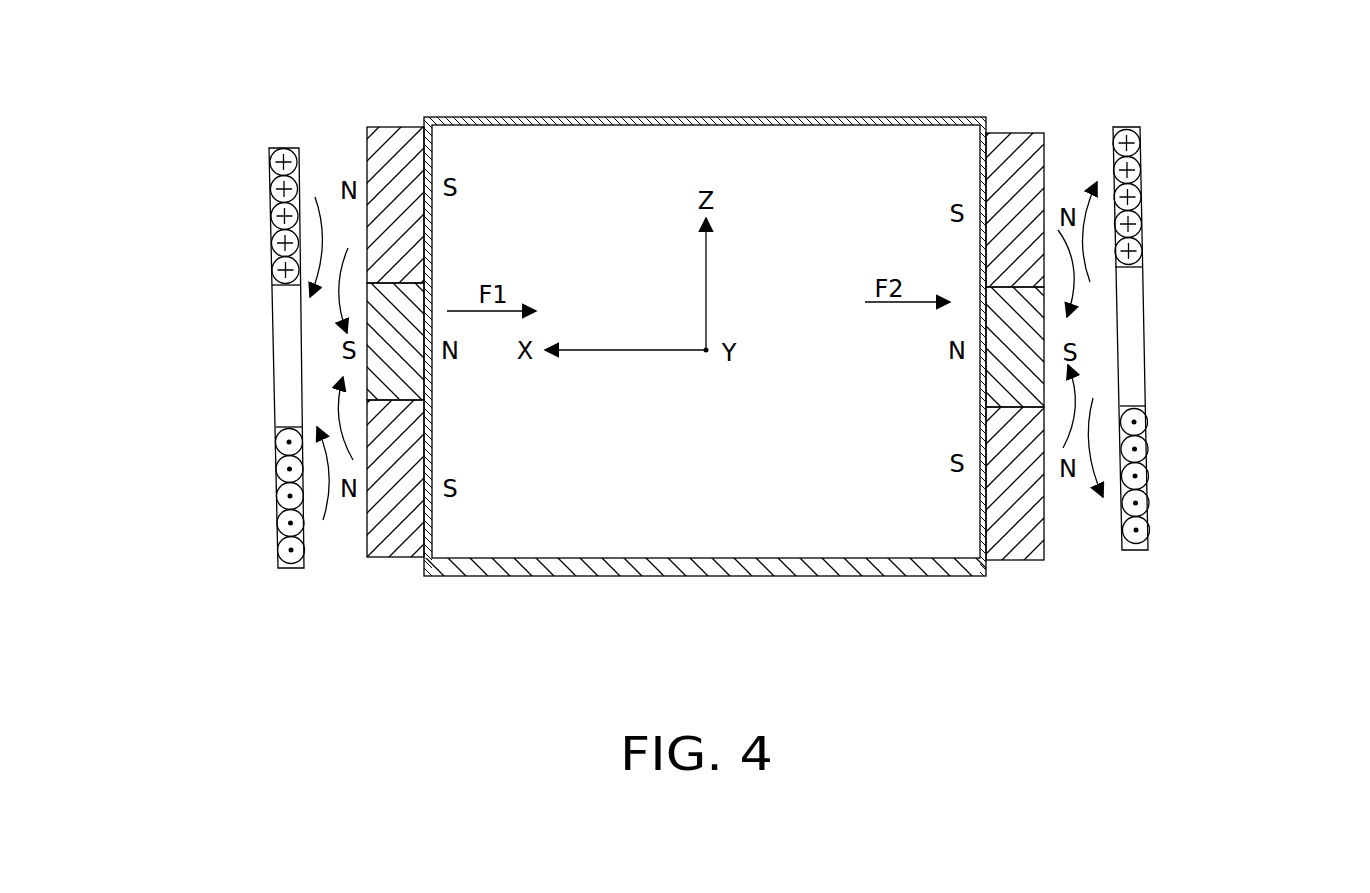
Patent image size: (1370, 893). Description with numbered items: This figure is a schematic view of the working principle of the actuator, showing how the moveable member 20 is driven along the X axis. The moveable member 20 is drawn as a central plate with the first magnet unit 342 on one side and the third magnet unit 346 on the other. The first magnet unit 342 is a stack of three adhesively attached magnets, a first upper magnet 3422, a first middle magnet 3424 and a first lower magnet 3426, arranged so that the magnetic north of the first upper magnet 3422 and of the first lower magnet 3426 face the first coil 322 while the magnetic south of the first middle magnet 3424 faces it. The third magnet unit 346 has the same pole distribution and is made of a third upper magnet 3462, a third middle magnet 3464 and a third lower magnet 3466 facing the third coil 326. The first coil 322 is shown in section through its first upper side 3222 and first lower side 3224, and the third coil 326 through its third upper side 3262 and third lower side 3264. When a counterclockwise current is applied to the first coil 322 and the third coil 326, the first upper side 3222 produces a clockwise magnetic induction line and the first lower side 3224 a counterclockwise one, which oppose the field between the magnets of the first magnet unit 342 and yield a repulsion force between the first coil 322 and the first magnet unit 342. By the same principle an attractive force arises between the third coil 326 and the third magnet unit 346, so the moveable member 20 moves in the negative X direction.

The moveable member 20 is at (660, 118).
The first magnet unit 342 is at (457, 293).
The first upper magnet 3422 is at (413, 220).
The first middle magnet 3424 is at (407, 385).
The first lower magnet 3426 is at (410, 448).
The third magnet unit 346 is at (965, 286).
The third upper magnet 3462 is at (1008, 246).
The third middle magnet 3464 is at (1012, 352).
The third lower magnet 3466 is at (1022, 441).
The first coil 322 is at (182, 358).
The first upper side 3222 is at (272, 253).
The first lower side 3224 is at (224, 489).
The third coil 326 is at (1236, 338).
The third upper side 3262 is at (1140, 215).
The third lower side 3264 is at (1198, 466).